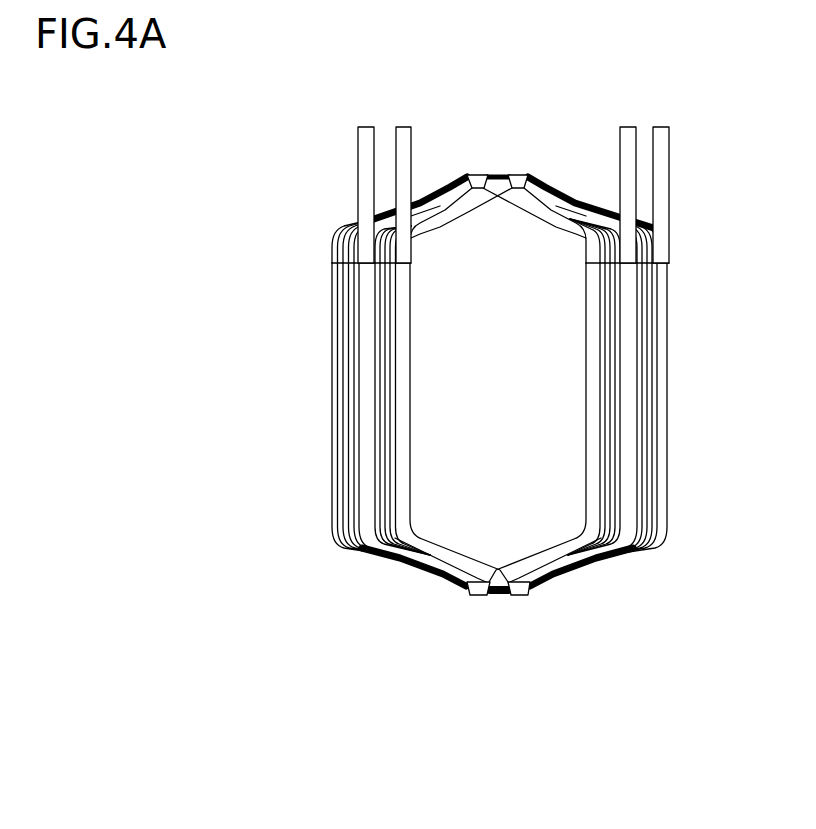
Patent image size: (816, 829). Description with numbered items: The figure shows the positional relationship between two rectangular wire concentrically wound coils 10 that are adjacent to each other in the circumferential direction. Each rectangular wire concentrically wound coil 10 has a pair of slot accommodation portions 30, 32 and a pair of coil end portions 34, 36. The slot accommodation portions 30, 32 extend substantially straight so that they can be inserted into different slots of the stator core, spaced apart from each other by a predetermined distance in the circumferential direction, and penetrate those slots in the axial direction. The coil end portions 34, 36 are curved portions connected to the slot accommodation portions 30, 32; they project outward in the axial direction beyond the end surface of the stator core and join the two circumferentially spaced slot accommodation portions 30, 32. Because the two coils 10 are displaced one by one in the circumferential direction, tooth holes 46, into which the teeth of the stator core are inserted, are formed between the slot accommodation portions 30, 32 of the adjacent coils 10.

The rectangular wire concentrically wound coil 10 is at (421, 592).
The slot accommodation portion 30 is at (367, 373).
The slot accommodation portion 32 is at (597, 375).
The coil end portion 34 is at (478, 597).
The coil end portion 36 is at (473, 173).
The tooth hole 46 is at (383, 333).